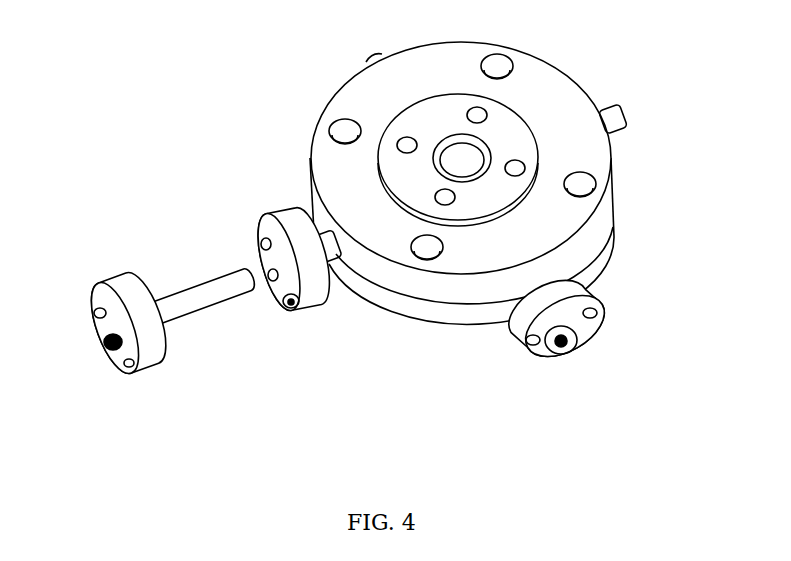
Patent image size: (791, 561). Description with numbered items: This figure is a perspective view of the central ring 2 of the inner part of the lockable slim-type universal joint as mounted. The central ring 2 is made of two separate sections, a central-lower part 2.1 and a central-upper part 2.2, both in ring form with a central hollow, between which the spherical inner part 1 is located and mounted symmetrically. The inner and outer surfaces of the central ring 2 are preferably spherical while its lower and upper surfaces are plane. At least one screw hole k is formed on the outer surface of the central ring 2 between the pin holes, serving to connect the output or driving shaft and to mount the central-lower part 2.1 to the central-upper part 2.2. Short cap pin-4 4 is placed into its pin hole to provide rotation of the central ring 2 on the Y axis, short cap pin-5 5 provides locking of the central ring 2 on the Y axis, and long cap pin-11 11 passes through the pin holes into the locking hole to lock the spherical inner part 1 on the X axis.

The inner part 1 is at (435, 114).
The central ring 2 is at (387, 212).
The central-lower part 2.1 is at (445, 146).
The central-upper part 2.2 is at (438, 321).
The short cap pin- 4 is at (311, 290).
The short cap pin- 5 is at (557, 332).
The long cap pin- 11 is at (212, 326).
The screw hole k is at (506, 66).